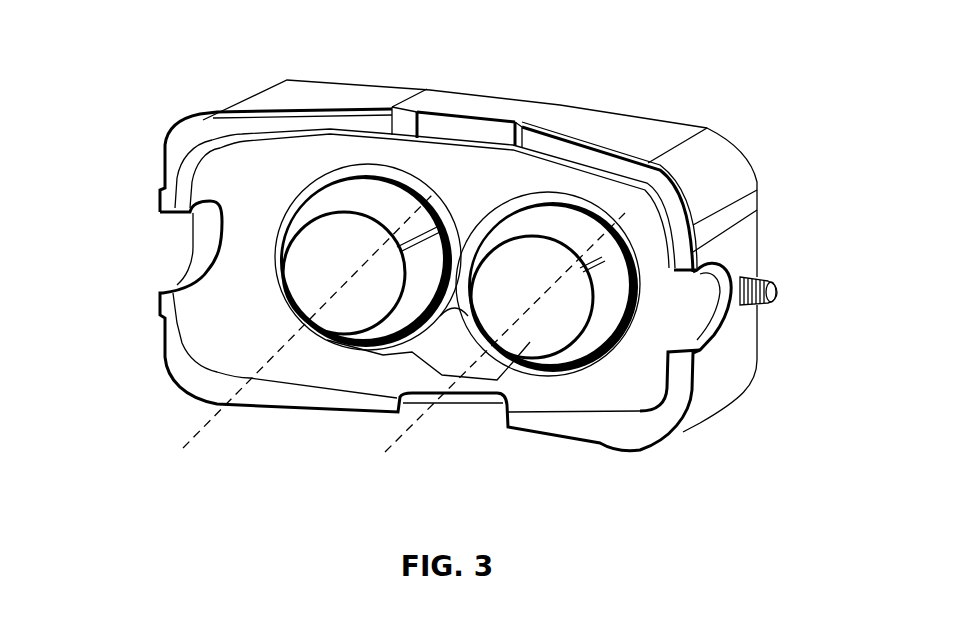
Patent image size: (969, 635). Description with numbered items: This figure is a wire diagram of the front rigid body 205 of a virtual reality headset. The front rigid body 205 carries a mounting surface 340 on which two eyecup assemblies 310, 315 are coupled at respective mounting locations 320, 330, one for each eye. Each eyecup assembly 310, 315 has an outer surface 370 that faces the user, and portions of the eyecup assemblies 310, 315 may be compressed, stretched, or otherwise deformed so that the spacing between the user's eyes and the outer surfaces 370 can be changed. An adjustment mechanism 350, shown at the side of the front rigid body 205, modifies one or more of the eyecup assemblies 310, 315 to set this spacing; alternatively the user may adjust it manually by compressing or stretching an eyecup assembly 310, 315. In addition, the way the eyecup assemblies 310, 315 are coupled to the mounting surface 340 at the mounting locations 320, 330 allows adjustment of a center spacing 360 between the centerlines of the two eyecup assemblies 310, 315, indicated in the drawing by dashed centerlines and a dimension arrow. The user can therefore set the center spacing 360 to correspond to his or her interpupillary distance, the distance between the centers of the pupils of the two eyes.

The front rigid body 205 is at (575, 100).
The eyecup assembly 310 is at (333, 200).
The eyecup assembly 315 is at (567, 222).
The mounting location 320 is at (283, 222).
The mounting location 330 is at (625, 340).
The mounting surface 340 is at (450, 203).
The adjustment mechanism 350 is at (769, 311).
The center spacing 360 is at (400, 425).
The outer surface 370 is at (532, 329).